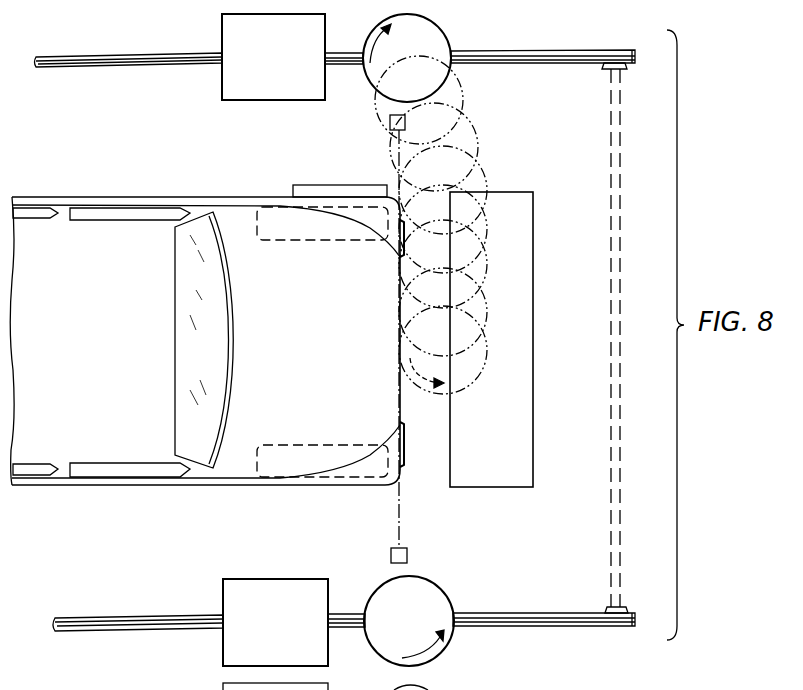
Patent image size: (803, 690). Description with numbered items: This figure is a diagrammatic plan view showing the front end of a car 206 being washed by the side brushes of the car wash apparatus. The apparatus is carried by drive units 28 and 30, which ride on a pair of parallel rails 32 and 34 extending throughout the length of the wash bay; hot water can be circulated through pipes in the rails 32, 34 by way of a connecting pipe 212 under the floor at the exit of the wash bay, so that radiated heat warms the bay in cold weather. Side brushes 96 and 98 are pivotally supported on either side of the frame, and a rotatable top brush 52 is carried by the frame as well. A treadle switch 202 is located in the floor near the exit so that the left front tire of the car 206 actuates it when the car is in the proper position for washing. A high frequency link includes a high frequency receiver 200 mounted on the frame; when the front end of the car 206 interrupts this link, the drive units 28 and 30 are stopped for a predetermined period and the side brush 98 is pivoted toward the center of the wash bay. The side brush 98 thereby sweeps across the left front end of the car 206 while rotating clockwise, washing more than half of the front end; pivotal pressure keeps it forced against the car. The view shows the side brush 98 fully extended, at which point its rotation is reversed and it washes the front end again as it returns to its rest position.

The drive unit 28 is at (290, 579).
The drive unit 30 is at (321, 25).
The rail 32 is at (147, 618).
The rail 34 is at (130, 57).
The rotatable top brush 52 is at (533, 465).
The side brush 96 is at (446, 592).
The side brush 98 is at (446, 30).
The high frequency receiver 200 is at (390, 120).
The treadle switch 202 is at (307, 185).
The car 206 is at (112, 356).
The connecting pipe 212 is at (621, 421).